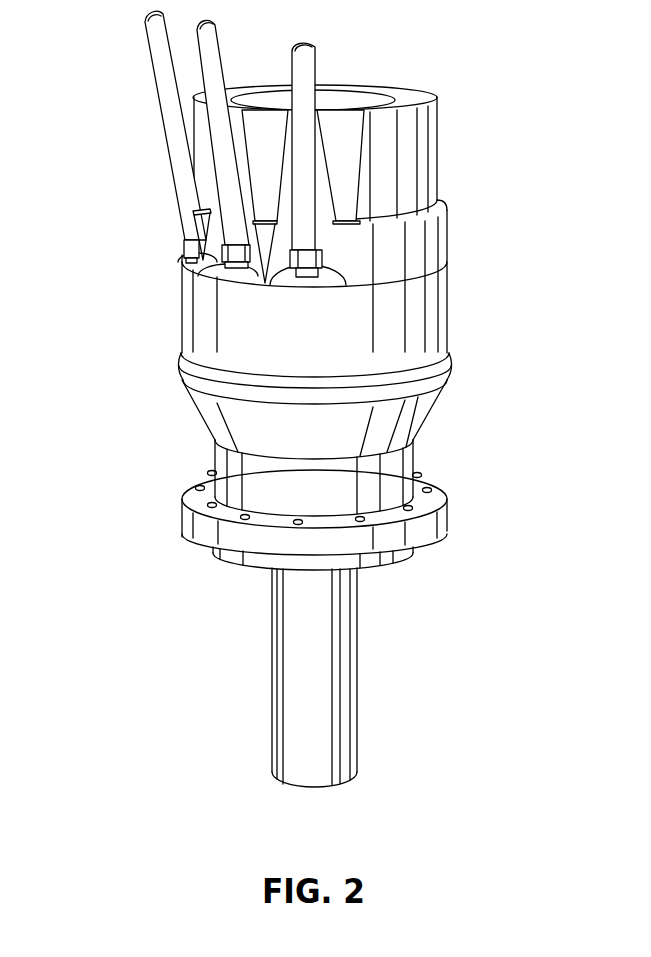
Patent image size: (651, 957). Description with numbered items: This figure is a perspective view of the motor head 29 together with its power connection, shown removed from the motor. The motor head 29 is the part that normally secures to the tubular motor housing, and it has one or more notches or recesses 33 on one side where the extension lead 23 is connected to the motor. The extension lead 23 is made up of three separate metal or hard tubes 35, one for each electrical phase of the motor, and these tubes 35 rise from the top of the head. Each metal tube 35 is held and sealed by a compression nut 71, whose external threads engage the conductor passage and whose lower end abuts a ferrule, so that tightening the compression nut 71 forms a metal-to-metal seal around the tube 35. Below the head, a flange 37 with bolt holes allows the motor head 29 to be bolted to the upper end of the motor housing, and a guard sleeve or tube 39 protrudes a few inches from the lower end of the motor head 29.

The extension lead 23 is at (209, 147).
The metal tube 35 is at (163, 79).
The notch or recess 33 is at (180, 264).
The compression nut 71 is at (322, 257).
The motor head 29 is at (213, 413).
The flange 37 is at (182, 507).
The guard sleeve 39 is at (300, 682).